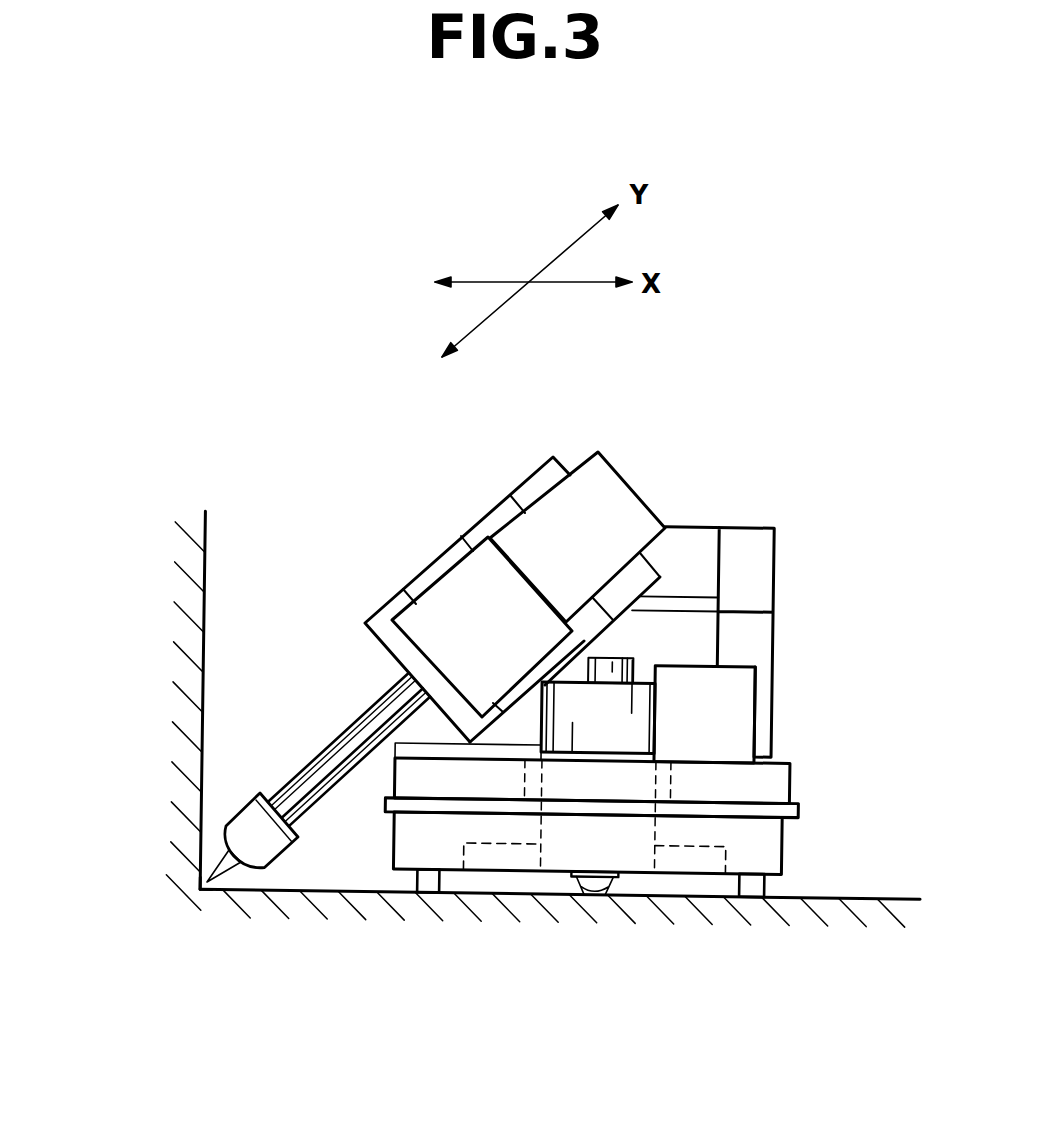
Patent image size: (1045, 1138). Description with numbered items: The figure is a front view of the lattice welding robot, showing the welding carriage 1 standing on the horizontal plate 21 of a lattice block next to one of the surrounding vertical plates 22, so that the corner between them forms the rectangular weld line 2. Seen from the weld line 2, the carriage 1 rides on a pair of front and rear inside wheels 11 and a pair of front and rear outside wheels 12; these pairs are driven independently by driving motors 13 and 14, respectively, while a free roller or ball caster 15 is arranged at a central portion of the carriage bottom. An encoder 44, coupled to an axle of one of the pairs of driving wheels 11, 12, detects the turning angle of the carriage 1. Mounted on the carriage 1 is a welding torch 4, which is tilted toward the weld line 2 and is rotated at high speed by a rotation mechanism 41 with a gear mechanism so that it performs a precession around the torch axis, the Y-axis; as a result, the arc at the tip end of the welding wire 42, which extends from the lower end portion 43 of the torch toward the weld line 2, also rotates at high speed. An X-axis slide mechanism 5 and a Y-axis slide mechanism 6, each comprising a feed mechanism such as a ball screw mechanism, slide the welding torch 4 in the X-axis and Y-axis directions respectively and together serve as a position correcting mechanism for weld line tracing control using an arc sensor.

The welding carriage 1 is at (387, 806).
The weld line 2 is at (202, 881).
The welding torch 4 is at (372, 712).
The X-axis slide mechanism 5 is at (749, 521).
The Y-axis slide mechanism 6 is at (525, 483).
The inside wheels 11 is at (404, 888).
The outside wheels 12 is at (775, 892).
The driving motor 13 is at (488, 861).
The driving motor 14 is at (728, 852).
The free roller or ball caster 15 is at (619, 894).
The horizontal plate 21 is at (717, 905).
The vertical plates 22 is at (181, 693).
The rotation mechanism 41 is at (428, 593).
The welding wire 42 is at (228, 888).
The probe holder 43 is at (247, 803).
The encoder 44 is at (619, 655).